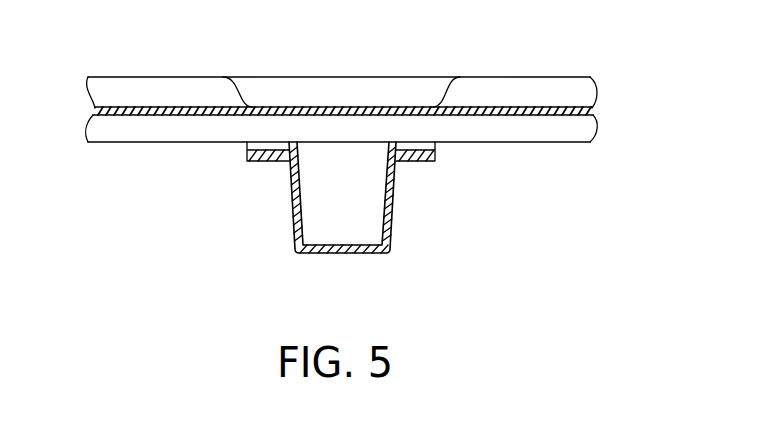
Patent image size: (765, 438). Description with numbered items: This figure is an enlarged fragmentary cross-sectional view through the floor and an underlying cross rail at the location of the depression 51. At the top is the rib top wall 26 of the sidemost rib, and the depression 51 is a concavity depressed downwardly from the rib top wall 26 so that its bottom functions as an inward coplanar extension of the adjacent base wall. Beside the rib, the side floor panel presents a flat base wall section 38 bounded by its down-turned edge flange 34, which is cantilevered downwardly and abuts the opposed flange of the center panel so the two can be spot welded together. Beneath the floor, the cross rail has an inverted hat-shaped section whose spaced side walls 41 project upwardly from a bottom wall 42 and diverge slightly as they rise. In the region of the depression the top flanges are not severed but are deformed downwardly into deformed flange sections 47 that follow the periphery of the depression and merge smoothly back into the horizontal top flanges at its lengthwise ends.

The rib top wall 26 is at (538, 77).
The depression 51 is at (412, 80).
The flat base wall section 38 is at (140, 107).
The edge flange 34 is at (147, 130).
The deformed flange sections 47 is at (263, 162).
The side walls 41 is at (390, 228).
The bottom wall 42 is at (327, 257).